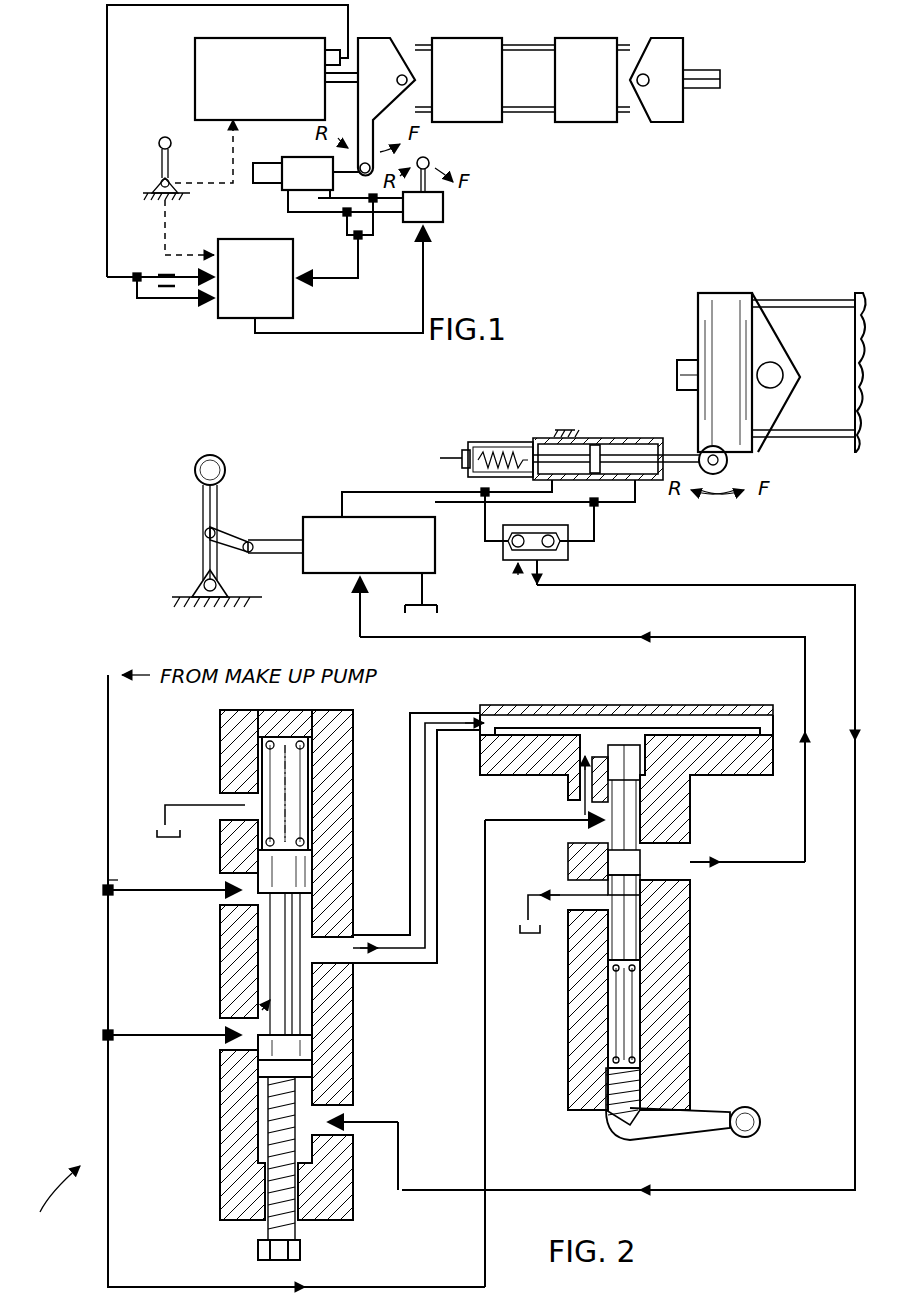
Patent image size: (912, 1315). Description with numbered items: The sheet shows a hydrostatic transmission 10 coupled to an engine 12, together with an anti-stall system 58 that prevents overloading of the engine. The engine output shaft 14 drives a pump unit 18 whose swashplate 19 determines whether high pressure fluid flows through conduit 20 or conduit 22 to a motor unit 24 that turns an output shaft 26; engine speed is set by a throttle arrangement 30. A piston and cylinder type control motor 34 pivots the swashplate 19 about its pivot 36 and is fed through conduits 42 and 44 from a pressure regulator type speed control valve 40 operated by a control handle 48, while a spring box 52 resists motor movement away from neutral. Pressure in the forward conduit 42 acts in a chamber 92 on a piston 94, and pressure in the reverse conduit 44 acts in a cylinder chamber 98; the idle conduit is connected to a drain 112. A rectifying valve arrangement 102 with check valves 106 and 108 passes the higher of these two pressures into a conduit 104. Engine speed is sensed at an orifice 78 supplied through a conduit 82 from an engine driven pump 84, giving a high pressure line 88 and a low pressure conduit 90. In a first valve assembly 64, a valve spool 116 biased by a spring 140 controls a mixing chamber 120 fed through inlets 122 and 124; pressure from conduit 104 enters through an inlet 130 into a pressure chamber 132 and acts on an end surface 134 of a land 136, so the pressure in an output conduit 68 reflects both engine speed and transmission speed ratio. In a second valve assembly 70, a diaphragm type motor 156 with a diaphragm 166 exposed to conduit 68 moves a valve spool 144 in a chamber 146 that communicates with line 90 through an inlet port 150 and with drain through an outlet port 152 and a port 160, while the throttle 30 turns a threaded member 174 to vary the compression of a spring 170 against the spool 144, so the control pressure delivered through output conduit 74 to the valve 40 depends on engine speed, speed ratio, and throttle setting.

In FIG. 1, the hydrostatic transmission 10 is at (727, 45).
In FIG. 1, the engine 12 is at (195, 78).
In FIG. 1, the output shaft 14 is at (325, 80).
In FIG. 2, the output shaft 14 is at (684, 367).
In FIG. 1, the pump unit 18 is at (528, 28).
In FIG. 2, the pump unit 18 is at (850, 290).
In FIG. 1, the swashplate 19 is at (388, 52).
In FIG. 2, the swashplate 19 is at (764, 305).
In FIG. 1, the conduit 20 is at (550, 53).
In FIG. 1, the conduit 22 is at (550, 112).
In FIG. 1, the motor unit 24 is at (618, 28).
In FIG. 1, the output shaft 26 is at (722, 78).
In FIG. 1, the throttle arrangement 30 is at (145, 166).
In FIG. 2, the throttle arrangement 30 is at (762, 1124).
In FIG. 1, the control motor 34 is at (306, 156).
In FIG. 2, the control motor 34 is at (638, 434).
In FIG. 2, the pivot pin 36 is at (782, 356).
In FIG. 1, the speed control valve 40 is at (450, 206).
In FIG. 2, the speed control valve 40 is at (304, 514).
In FIG. 1, the conduit 42 is at (314, 210).
In FIG. 2, the conduit 42 is at (378, 494).
In FIG. 1, the conduit 44 is at (278, 140).
In FIG. 2, the conduit 44 is at (438, 502).
In FIG. 1, the control handle 48 is at (436, 148).
In FIG. 2, the control handle 48 is at (210, 457).
In FIG. 1, the spring box 52 is at (268, 190).
In FIG. 2, the spring box 52 is at (461, 461).
In FIG. 1, the anti-stall system 58 is at (235, 236).
In FIG. 2, the anti-stall system 58 is at (38, 1222).
In FIG. 2, the first valve assembly 64 is at (202, 1224).
In FIG. 2, the output conduit 68 is at (392, 967).
In FIG. 2, the second valve assembly 70 is at (651, 974).
In FIG. 1, the output conduit 74 is at (428, 268).
In FIG. 2, the output conduit 74 is at (738, 636).
In FIG. 1, the orifice 78 is at (162, 272).
In FIG. 2, the orifice 78 is at (112, 920).
In FIG. 1, the conduit 82 is at (107, 135).
In FIG. 2, the conduit 82 is at (108, 794).
In FIG. 1, the pump 84 is at (325, 57).
In FIG. 1, the line 88 is at (172, 298).
In FIG. 2, the line 88 is at (166, 894).
In FIG. 1, the conduit 90 is at (192, 274).
In FIG. 2, the conduit 90 is at (108, 1002).
In FIG. 2, the chamber 92 is at (564, 454).
In FIG. 2, the piston 94 is at (598, 444).
In FIG. 2, the cylinder chamber 98 is at (646, 450).
In FIG. 2, the rectifying valve arrangement 102 is at (538, 555).
In FIG. 1, the conduit 104 is at (324, 278).
In FIG. 2, the conduit 104 is at (783, 585).
In FIG. 2, the check valve 106 is at (514, 543).
In FIG. 2, the check valve 108 is at (562, 542).
In FIG. 2, the drain 112 is at (409, 600).
In FIG. 2, the valve spool 116 is at (280, 966).
In FIG. 2, the mixing chamber 120 is at (314, 910).
In FIG. 2, the inlet 122 is at (228, 876).
In FIG. 2, the inlet 124 is at (210, 1038).
In FIG. 2, the inlet 130 is at (351, 1126).
In FIG. 2, the pressure chamber 132 is at (300, 1174).
In FIG. 2, the end surface 134 is at (310, 1082).
In FIG. 2, the land 136 is at (307, 1052).
In FIG. 2, the biasing spring 140 is at (306, 784).
In FIG. 2, the valve spool 144 is at (623, 818).
In FIG. 2, the chamber 146 is at (628, 924).
In FIG. 2, the inlet port 150 is at (575, 843).
In FIG. 2, the outlet port 152 is at (575, 886).
In FIG. 2, the diaphragm type motor 156 is at (731, 709).
In FIG. 2, the supply port 160 is at (694, 854).
In FIG. 2, the diaphragm 166 is at (670, 745).
In FIG. 2, the spring 170 is at (644, 1012).
In FIG. 2, the threaded member 174 is at (648, 1092).